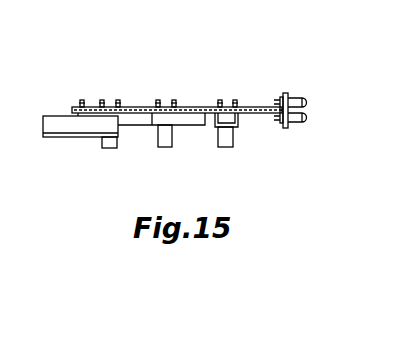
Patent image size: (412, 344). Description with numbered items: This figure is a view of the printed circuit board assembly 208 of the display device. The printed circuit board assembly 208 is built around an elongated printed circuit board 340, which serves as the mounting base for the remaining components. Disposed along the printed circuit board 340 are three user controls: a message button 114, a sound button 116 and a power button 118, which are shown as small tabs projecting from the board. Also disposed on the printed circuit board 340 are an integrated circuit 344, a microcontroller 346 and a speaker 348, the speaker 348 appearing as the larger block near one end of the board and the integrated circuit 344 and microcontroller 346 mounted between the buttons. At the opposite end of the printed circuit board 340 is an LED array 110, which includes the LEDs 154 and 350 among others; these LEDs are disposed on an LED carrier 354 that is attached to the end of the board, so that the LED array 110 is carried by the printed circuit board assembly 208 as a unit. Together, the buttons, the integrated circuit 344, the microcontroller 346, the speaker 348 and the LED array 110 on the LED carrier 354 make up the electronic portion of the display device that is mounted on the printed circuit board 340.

The printed circuit board assembly 208 is at (143, 79).
The printed circuit board 340 is at (265, 105).
The integrated circuit 344 is at (127, 125).
The speaker 348 is at (68, 138).
The message button 114 is at (110, 148).
The sound button 116 is at (165, 148).
The microcontroller 346 is at (187, 121).
The power button 118 is at (227, 148).
The LED 350 is at (300, 96).
The LED carrier 354 is at (287, 128).
The LED array 110 is at (317, 97).
The LED 154 is at (302, 123).